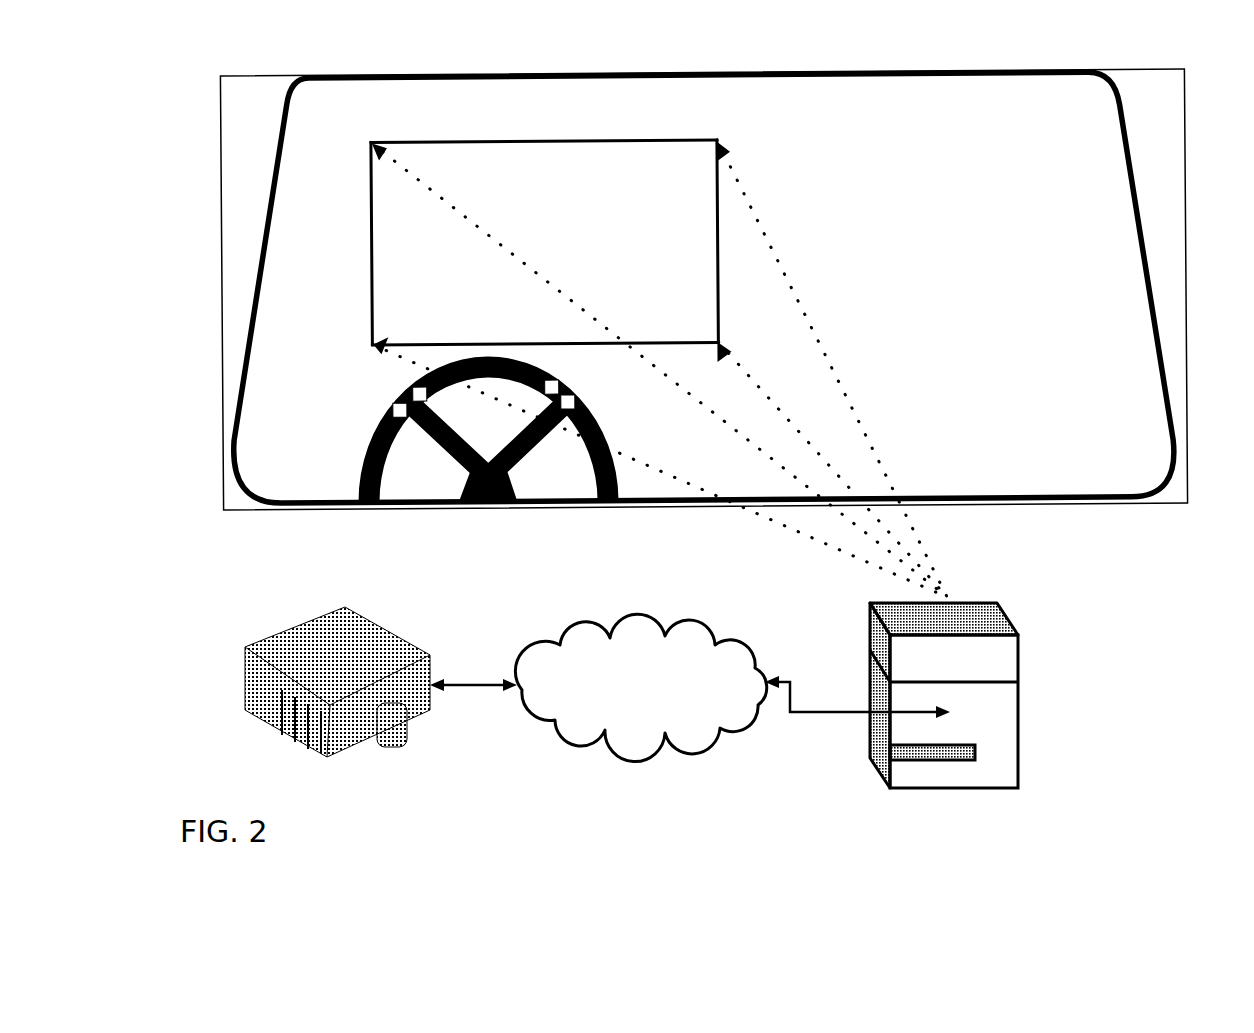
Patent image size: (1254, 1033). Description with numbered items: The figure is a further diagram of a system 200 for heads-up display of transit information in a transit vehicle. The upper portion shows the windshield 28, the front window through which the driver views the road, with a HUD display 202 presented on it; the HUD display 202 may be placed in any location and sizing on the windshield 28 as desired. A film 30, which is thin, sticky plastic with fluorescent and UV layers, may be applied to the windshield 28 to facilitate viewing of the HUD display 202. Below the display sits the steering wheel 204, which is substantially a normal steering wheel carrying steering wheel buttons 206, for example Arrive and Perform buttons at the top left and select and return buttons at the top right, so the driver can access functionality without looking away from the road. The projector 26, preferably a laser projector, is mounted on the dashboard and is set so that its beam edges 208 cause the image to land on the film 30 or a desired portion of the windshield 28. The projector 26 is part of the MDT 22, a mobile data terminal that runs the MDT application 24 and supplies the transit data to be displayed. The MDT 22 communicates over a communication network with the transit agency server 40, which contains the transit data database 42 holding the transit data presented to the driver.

The vehicle environment / system 200 is at (1165, 560).
The windshield 28 is at (320, 478).
The HUD display 202 is at (543, 140).
The steering wheel 204 is at (608, 505).
The steering wheel buttons 206 is at (390, 408).
The beam edges 208 is at (532, 260).
The film 30 is at (715, 645).
The MDT 22 is at (1020, 752).
The MDT application 24 is at (930, 762).
The projector 26 is at (1020, 657).
The transit agency server 40 is at (356, 758).
The transit data database 42 is at (407, 745).